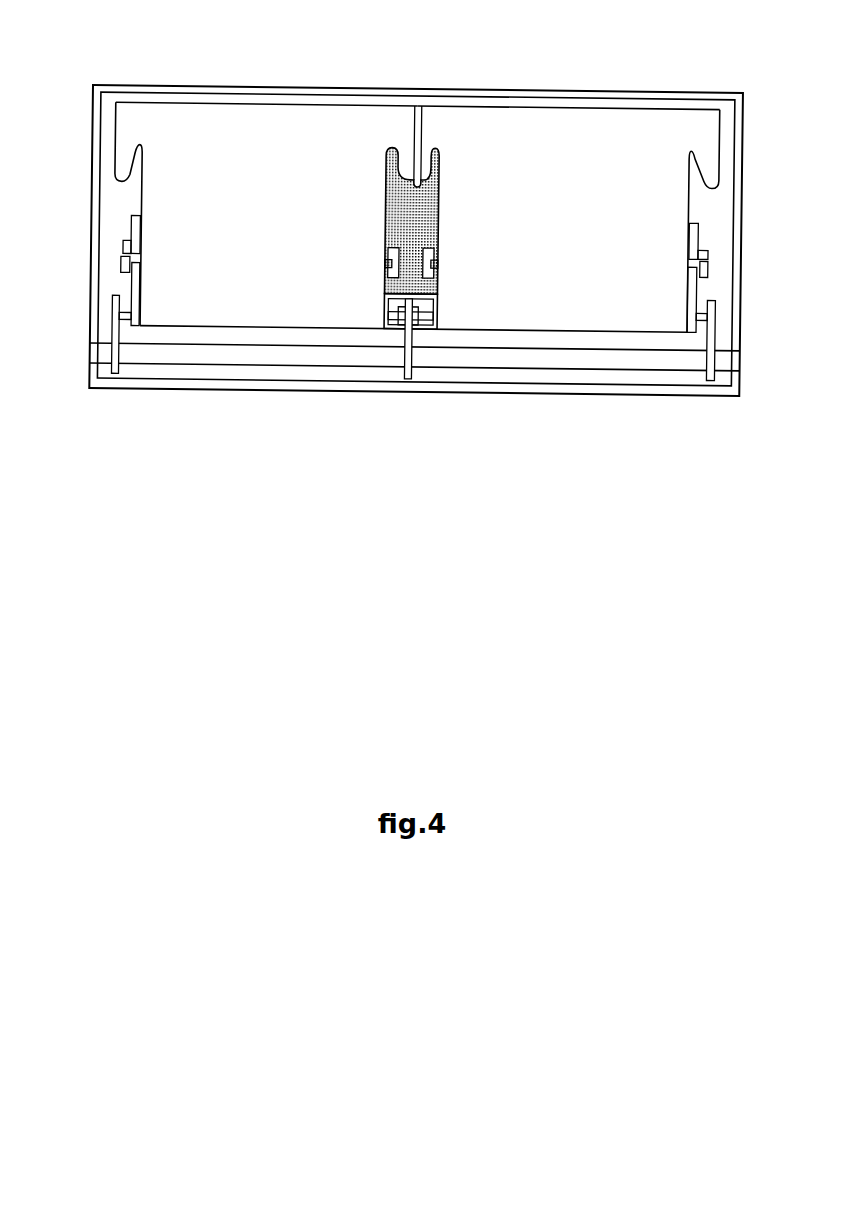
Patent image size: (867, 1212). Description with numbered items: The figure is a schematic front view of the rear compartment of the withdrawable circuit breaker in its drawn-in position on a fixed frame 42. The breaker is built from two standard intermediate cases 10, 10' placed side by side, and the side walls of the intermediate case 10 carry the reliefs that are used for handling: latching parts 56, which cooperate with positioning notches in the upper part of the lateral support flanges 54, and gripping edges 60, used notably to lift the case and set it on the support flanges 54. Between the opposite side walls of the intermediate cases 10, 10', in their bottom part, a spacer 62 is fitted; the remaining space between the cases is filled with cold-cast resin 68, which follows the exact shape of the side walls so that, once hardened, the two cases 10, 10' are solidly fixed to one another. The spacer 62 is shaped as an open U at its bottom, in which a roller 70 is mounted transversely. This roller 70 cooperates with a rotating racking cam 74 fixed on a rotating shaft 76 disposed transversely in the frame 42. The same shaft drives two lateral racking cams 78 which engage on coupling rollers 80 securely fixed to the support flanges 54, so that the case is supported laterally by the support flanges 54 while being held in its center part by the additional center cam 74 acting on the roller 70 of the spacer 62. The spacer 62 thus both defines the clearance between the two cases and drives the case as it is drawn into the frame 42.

The intermediate case 10 is at (569, 61).
The intermediate case 10' is at (267, 60).
The fixed frame 42 is at (746, 101).
The lateral support flanges 54 is at (136, 223).
The latching parts 56 is at (126, 262).
The gripping edges 60 is at (122, 149).
The spacer 62 is at (437, 330).
The resin 68 is at (410, 218).
The roller 70 is at (402, 330).
The rotating racking cam 74 is at (414, 375).
The rotating shaft 76 is at (557, 362).
The lateral racking cams 78 is at (117, 343).
The coupling rollers 80 is at (112, 301).